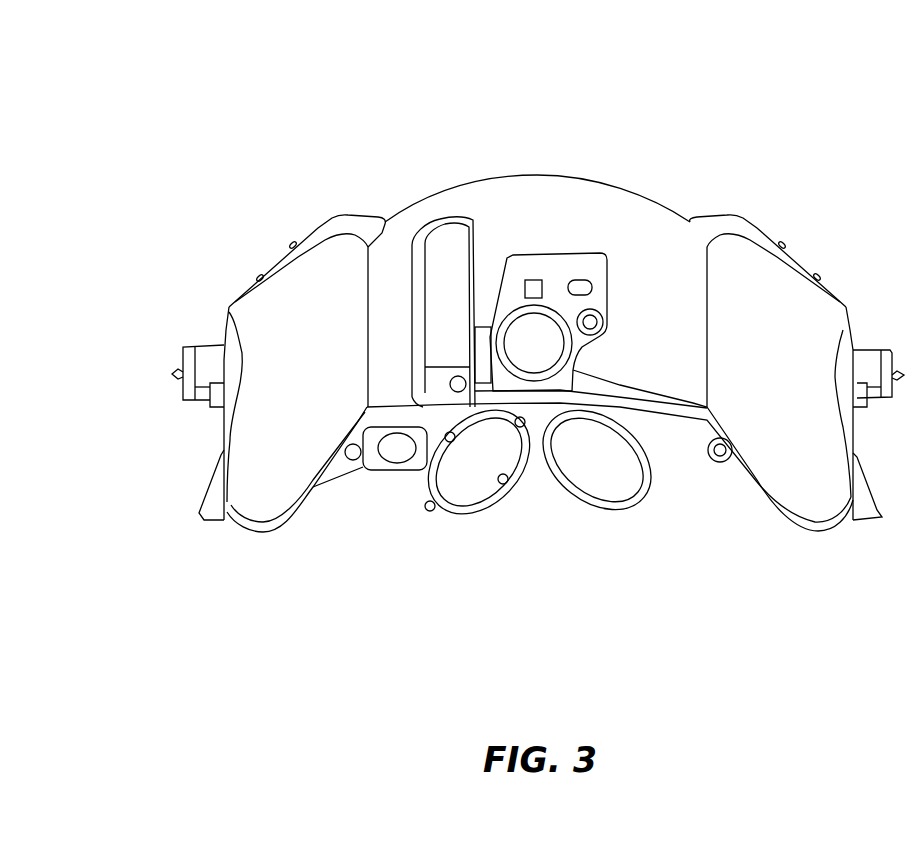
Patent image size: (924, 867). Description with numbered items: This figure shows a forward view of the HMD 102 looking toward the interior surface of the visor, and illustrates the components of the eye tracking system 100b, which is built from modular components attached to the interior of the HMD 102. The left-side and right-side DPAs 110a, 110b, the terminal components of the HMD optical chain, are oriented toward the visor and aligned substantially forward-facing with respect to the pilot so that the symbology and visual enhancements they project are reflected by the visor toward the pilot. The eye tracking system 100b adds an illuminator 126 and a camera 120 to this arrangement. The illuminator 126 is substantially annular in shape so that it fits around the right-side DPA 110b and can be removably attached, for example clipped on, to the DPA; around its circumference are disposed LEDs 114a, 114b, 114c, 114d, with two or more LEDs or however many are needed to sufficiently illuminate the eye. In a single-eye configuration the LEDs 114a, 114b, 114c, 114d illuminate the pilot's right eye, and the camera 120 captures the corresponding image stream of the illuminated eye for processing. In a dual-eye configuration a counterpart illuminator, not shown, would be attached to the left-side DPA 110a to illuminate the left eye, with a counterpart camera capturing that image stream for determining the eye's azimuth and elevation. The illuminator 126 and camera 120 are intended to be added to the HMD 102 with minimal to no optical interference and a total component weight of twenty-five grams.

The eye tracking system 100b is at (122, 118).
The HMD 102 is at (624, 196).
The left-side DPA 110a is at (615, 483).
The right-side DPA 110b is at (467, 473).
The LED 114a is at (518, 427).
The LED 114b is at (429, 511).
The LED 114c is at (450, 432).
The LED 114d is at (503, 484).
The camera 120 is at (383, 470).
The illuminator 126 is at (458, 503).